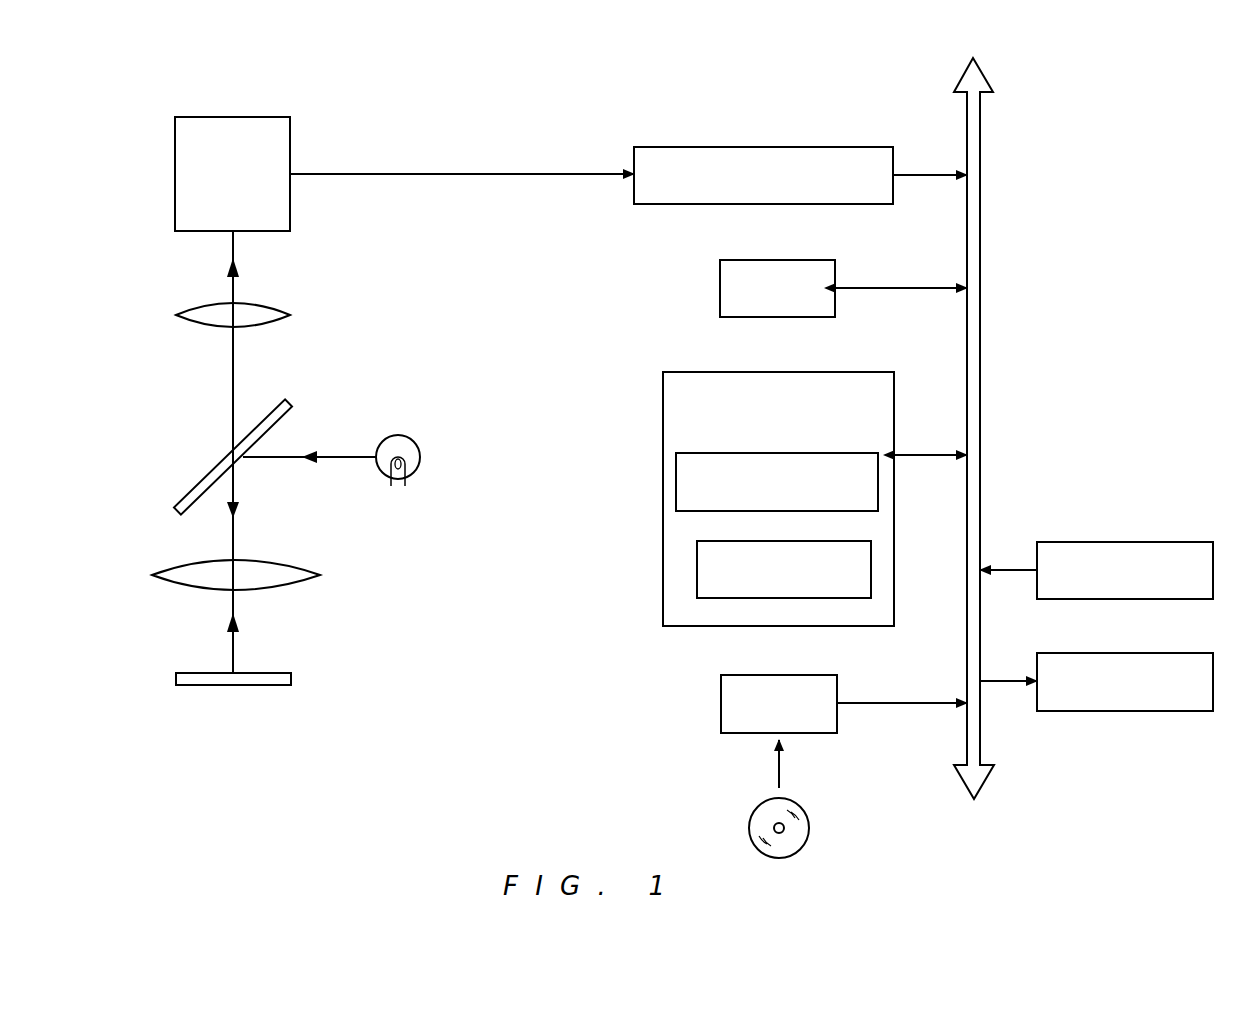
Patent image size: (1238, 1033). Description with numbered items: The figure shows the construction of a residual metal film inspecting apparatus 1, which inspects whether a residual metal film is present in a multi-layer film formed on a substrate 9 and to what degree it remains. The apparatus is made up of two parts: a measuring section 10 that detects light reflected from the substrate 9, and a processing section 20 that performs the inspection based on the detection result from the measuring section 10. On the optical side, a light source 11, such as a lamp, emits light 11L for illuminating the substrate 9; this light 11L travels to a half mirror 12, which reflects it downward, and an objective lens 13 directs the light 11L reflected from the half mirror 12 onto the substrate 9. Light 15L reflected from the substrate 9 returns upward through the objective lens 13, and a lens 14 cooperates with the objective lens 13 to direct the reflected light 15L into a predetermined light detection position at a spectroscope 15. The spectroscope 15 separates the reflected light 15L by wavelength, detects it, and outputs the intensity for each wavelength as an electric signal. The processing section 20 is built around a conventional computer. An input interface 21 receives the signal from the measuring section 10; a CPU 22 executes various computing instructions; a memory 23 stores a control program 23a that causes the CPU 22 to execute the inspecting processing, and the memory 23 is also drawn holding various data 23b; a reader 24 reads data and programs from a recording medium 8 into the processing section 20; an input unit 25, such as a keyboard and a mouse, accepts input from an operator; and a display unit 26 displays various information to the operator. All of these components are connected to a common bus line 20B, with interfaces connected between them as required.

The residual metal film inspecting apparatus 1 is at (167, 51).
The measuring section 10 is at (342, 108).
The spectroscope 15 is at (175, 172).
The reflected light 15L is at (236, 285).
The lens 14 is at (200, 307).
The half mirror 12 is at (200, 480).
The objective lens 13 is at (185, 564).
The substrate 9 is at (190, 672).
The light source 11 is at (407, 438).
The light 11L is at (352, 458).
The processing section 20 is at (1056, 144).
The bus line 20B is at (981, 236).
The input interface 21 is at (655, 147).
The CPU 22 is at (720, 290).
The memory 23 is at (688, 372).
The control program 23a is at (676, 482).
The various data 23b is at (697, 572).
The reader 24 is at (721, 702).
The recording medium 8 is at (800, 806).
The input unit 25 is at (1150, 542).
The display unit 26 is at (1150, 653).